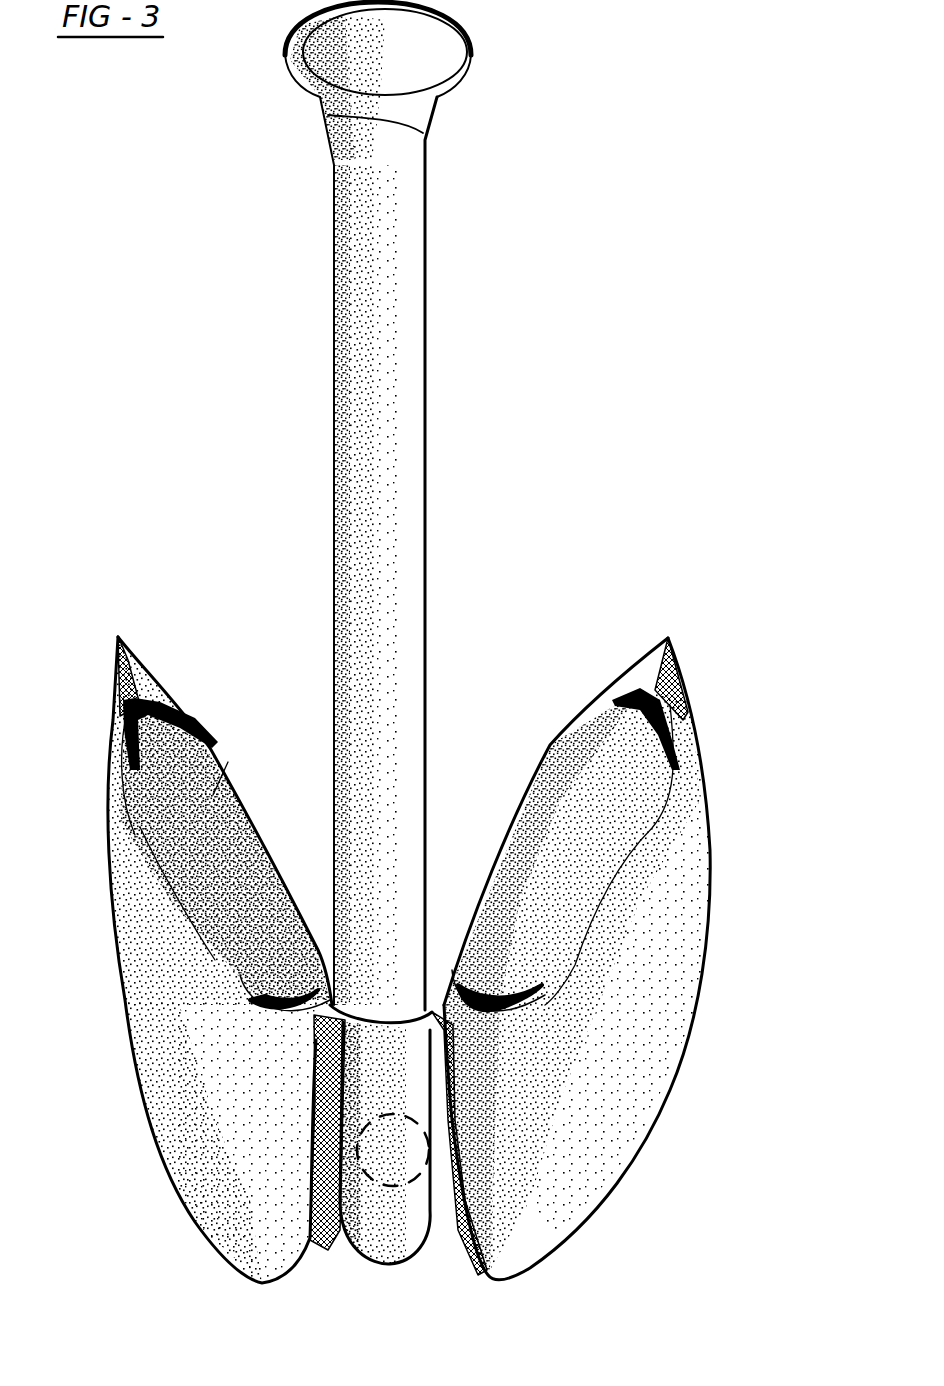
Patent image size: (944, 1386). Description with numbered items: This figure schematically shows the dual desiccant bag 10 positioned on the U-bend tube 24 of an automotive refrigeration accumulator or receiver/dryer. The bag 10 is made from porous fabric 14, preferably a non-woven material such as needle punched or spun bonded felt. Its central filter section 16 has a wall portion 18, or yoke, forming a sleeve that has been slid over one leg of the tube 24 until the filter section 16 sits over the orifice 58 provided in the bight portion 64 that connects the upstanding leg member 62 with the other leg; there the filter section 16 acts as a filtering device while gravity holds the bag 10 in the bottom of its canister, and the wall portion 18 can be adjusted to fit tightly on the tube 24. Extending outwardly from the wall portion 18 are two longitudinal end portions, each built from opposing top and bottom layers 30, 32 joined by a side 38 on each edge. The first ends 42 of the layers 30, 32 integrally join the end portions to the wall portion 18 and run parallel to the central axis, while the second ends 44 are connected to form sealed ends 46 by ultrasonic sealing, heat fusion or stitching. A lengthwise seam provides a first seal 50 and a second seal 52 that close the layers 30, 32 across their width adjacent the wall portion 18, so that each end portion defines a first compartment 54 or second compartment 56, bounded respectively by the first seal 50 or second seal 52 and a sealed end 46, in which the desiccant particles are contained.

The desiccant bag 10 is at (716, 753).
The porous fabric 14 is at (672, 882).
The filter section 16 is at (393, 1262).
The wall portion 18 is at (362, 1262).
The U-bend tube 24 is at (446, 299).
The top layer 30 is at (160, 1073).
The bottom layer 32 is at (190, 703).
The side 38 is at (228, 762).
The first end 42 is at (330, 978).
The second end 44 is at (111, 728).
The sealed end 46 is at (118, 664).
The first seal 50 is at (320, 1222).
The second seal 52 is at (481, 1270).
The first compartment 54 is at (290, 1104).
The second compartment 56 is at (633, 1064).
The orifice 58 is at (345, 1160).
The upstanding leg member 62 is at (408, 218).
The bight portion 64 is at (390, 978).